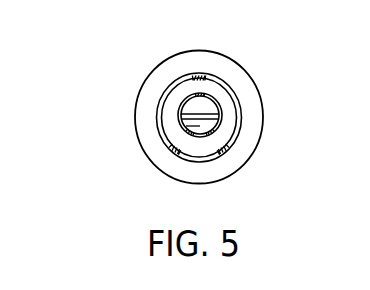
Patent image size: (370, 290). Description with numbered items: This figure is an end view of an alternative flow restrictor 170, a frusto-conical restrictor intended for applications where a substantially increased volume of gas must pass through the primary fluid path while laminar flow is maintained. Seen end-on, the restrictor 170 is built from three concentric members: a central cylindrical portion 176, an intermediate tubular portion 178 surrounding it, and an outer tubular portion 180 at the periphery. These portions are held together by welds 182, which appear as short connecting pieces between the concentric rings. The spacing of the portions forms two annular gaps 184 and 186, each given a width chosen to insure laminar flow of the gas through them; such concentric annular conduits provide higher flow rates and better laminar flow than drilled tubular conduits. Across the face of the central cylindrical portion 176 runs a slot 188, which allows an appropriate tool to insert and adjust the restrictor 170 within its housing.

The flow restrictor 170 is at (134, 117).
The central cylindrical portion 176 is at (189, 125).
The intermediate tubular portion 178 is at (225, 120).
The outer tubular portion 180 is at (220, 70).
The welds 182 is at (203, 76).
The annular gap 184 is at (224, 118).
The annular gap 186 is at (220, 143).
The slot 188 is at (183, 112).